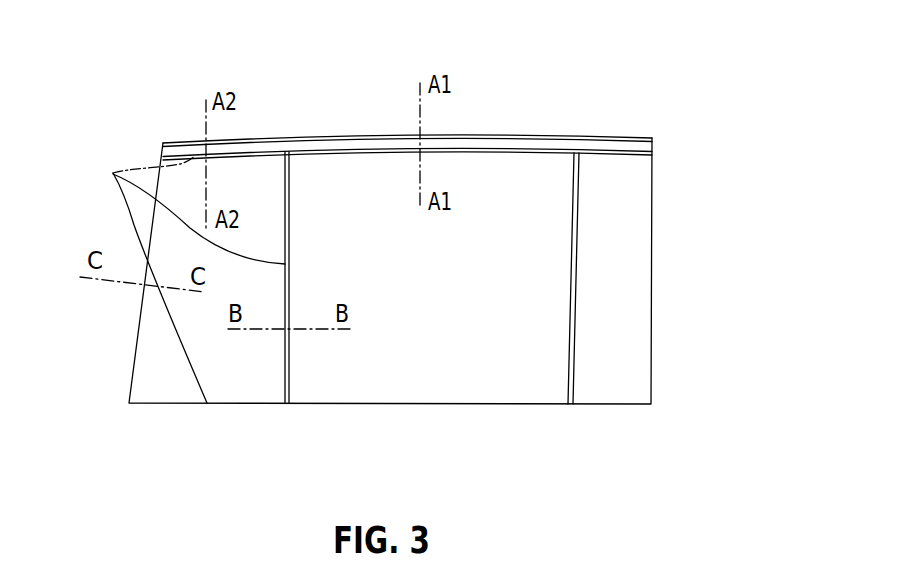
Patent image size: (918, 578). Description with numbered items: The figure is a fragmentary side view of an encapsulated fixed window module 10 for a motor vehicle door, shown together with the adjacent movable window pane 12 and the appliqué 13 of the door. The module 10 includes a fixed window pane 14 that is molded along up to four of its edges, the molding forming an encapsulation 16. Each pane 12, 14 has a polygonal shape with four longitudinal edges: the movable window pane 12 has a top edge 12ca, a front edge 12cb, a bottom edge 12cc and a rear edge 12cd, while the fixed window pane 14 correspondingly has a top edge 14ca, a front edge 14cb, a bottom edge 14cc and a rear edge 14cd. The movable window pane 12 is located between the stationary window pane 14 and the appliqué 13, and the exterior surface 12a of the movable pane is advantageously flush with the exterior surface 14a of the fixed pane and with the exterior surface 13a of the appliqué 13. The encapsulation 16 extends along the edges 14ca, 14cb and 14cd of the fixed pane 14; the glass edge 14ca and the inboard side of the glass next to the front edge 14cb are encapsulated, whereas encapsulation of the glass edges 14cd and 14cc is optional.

The encapsulated fixed window module 10 is at (278, 128).
The movable window pane 12 is at (523, 300).
The exterior surface of the movable window pane 12a is at (468, 380).
The top edge of the movable window pane 12ca is at (527, 148).
The front edge of the movable window pane 12cb is at (575, 245).
The bottom edge of the movable window pane 12cc is at (557, 408).
The rear edge of the movable window pane 12cd is at (283, 388).
The appliqué 13 is at (633, 178).
The exterior surface of the appliqué 13a is at (628, 357).
The fixed window pane 14 is at (183, 387).
The exterior surface of the fixed window pane 14a is at (238, 387).
The top edge of the fixed window pane 14ca is at (180, 146).
The front edge of the fixed window pane 14cb is at (288, 190).
The bottom edge of the fixed window pane 14cc is at (153, 405).
The rear edge of the fixed window pane 14cd is at (135, 358).
The encapsulation 16 is at (186, 279).